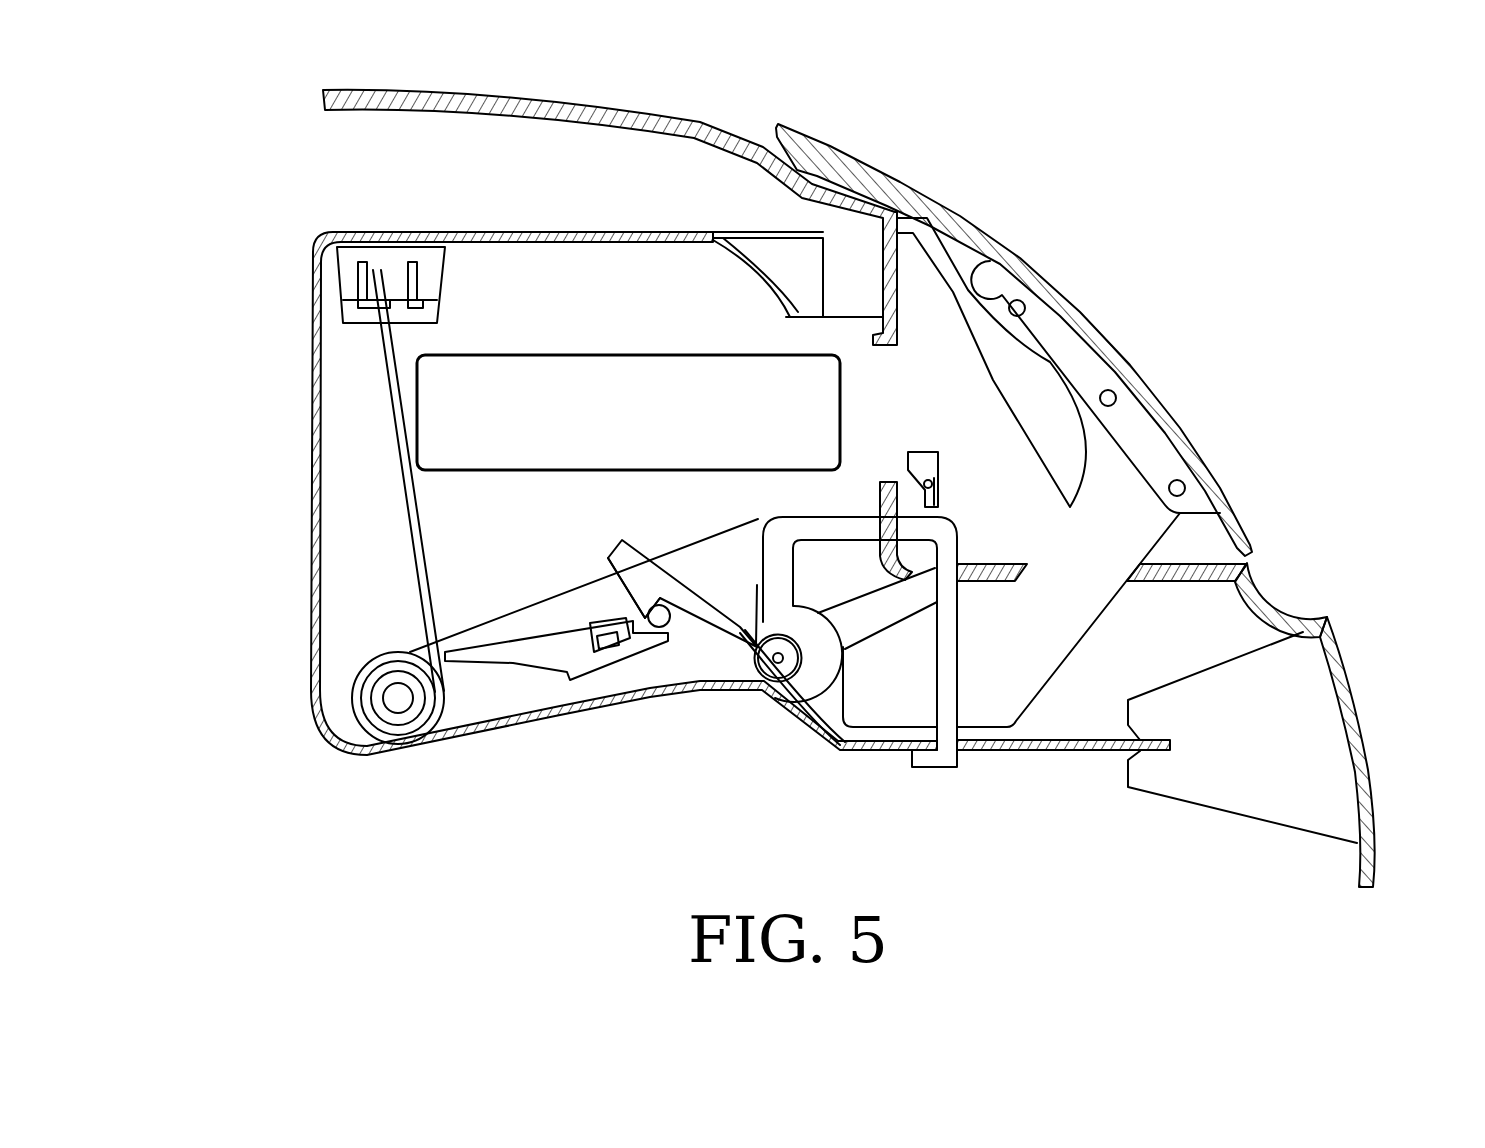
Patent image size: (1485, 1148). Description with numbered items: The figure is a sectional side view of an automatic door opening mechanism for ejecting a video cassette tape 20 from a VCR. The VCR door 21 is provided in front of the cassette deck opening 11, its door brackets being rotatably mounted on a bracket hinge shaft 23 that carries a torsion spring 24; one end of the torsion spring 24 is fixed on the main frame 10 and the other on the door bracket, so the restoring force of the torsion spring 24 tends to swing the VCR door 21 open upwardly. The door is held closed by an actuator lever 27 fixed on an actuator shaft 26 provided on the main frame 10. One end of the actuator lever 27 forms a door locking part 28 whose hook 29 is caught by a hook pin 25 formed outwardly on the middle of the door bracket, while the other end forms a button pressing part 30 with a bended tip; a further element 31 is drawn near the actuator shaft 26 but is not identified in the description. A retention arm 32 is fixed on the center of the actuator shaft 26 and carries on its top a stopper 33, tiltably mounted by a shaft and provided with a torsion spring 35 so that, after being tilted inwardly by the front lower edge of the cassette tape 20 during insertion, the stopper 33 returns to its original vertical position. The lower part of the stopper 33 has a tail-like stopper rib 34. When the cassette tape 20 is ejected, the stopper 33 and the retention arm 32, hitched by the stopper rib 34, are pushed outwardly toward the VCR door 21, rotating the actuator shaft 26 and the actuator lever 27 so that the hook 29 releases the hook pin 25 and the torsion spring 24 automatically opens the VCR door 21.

The main frame 10 is at (1352, 688).
The cassette deck opening 11 is at (893, 375).
The cassette tape 20 is at (585, 372).
The VCR door 21 is at (1082, 330).
The bracket hinge shaft 23 is at (380, 697).
The torsion spring 24 is at (513, 665).
The hook pin 25 is at (660, 628).
The actuator shaft 26 is at (778, 664).
The actuator lever 27 is at (790, 525).
The door locking part 28 is at (700, 608).
The hook 29 is at (628, 598).
The button pressing part 30 is at (935, 767).
The spring 31 is at (745, 682).
The retention arm 32 is at (882, 612).
The stopper 33 is at (917, 462).
The stopper rib 34 is at (938, 498).
The torsion spring 35 is at (938, 481).